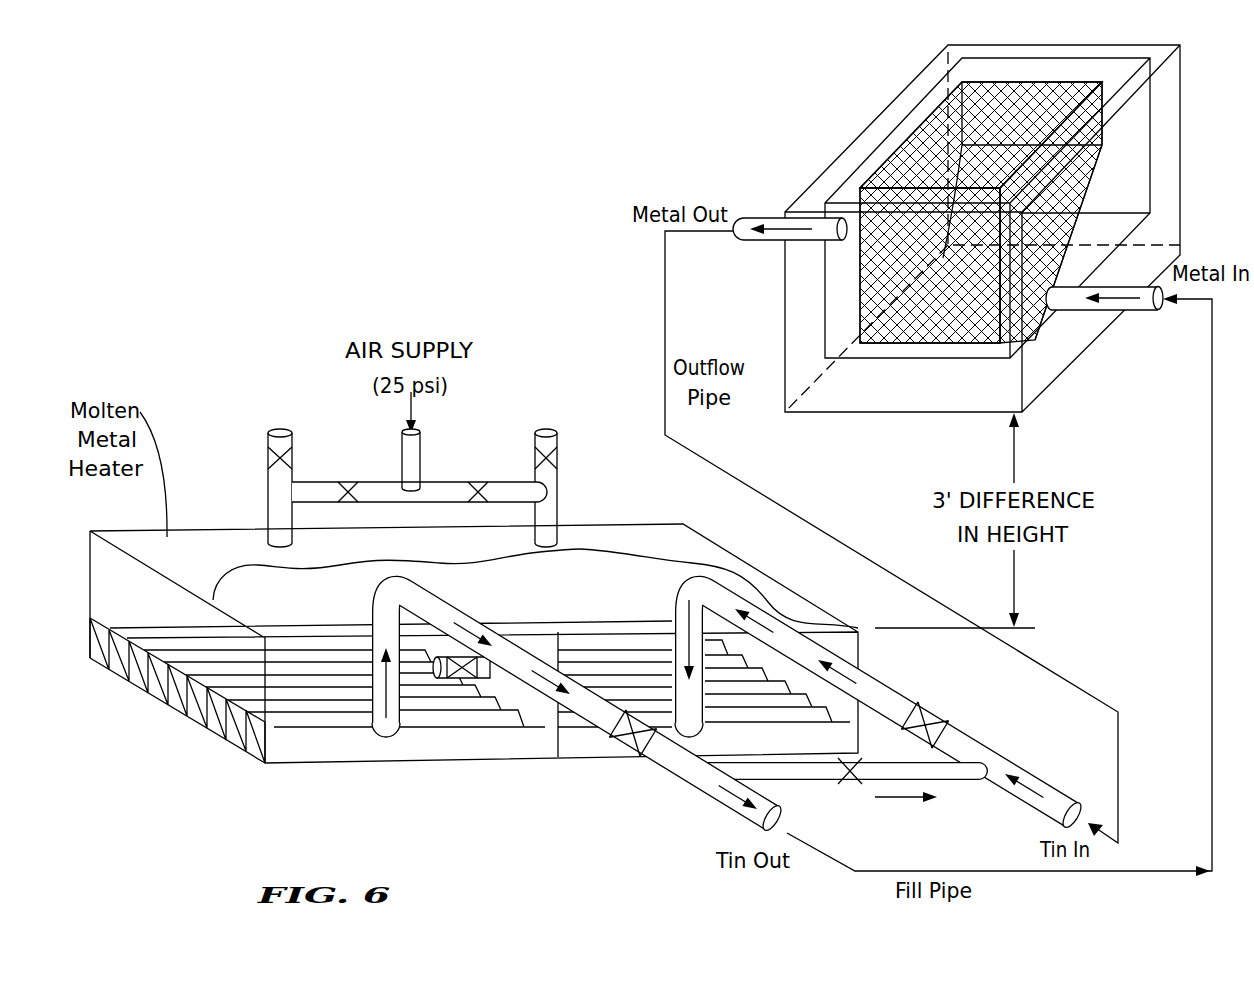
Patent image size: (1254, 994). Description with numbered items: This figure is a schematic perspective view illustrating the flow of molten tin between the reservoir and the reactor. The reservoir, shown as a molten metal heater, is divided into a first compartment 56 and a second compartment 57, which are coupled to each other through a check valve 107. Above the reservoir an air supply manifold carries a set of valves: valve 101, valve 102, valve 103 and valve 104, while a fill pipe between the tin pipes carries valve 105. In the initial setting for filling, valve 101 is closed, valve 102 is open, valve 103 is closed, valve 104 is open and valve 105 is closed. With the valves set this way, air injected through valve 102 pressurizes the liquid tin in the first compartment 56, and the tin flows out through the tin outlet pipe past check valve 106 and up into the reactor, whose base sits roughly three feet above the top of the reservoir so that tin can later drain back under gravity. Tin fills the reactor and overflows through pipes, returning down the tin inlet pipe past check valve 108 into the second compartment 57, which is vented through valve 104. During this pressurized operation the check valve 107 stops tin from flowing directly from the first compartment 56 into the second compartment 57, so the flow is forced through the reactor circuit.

The first compartment 56 is at (311, 606).
The second compartment 57 is at (603, 601).
The valve 101 is at (268, 460).
The valve 102 is at (348, 482).
The valve 103 is at (478, 482).
The valve 104 is at (558, 458).
The valve 105 is at (848, 783).
The check valve 106 is at (647, 750).
The check valve 107 is at (452, 658).
The check valve 108 is at (926, 706).